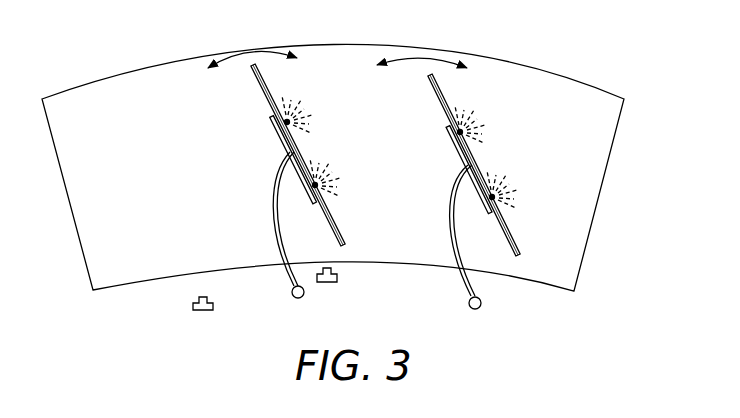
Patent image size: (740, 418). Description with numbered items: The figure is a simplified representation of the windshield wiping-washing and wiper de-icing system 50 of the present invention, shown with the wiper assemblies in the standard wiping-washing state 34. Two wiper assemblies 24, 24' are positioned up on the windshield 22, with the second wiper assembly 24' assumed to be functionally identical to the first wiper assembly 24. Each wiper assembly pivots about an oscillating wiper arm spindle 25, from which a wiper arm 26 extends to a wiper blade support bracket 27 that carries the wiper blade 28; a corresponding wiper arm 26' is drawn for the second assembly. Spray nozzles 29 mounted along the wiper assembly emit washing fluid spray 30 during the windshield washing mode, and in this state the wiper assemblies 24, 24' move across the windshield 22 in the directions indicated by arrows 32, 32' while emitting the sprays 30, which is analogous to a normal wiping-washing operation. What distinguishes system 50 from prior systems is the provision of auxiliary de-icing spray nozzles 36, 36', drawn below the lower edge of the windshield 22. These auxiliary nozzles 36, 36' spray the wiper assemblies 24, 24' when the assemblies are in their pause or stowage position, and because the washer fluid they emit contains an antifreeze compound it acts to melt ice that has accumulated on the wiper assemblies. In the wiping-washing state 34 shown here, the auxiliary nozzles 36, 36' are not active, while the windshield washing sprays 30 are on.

The windshield 22 is at (129, 130).
The wiper assembly 24 is at (489, 165).
The wiper assembly 24' is at (279, 155).
The oscillating wiper arm spindle 25 is at (482, 303).
The wiper arm 26 is at (442, 230).
The second wiper arm 26' is at (288, 225).
The wiper blade support bracket 27 is at (450, 137).
The wiper blade 28 is at (437, 95).
The spray nozzles 29 is at (503, 212).
The spray 30 is at (538, 186).
The direction 32 is at (426, 39).
The direction 32' is at (259, 39).
The standard wiping-washing state 34 is at (158, 167).
The auxiliary de-icing spray nozzle 36 is at (347, 295).
The auxiliary de-icing spray nozzle 36' is at (185, 322).
The windshield wiping-washing and wiper de-icing system 50 is at (628, 221).